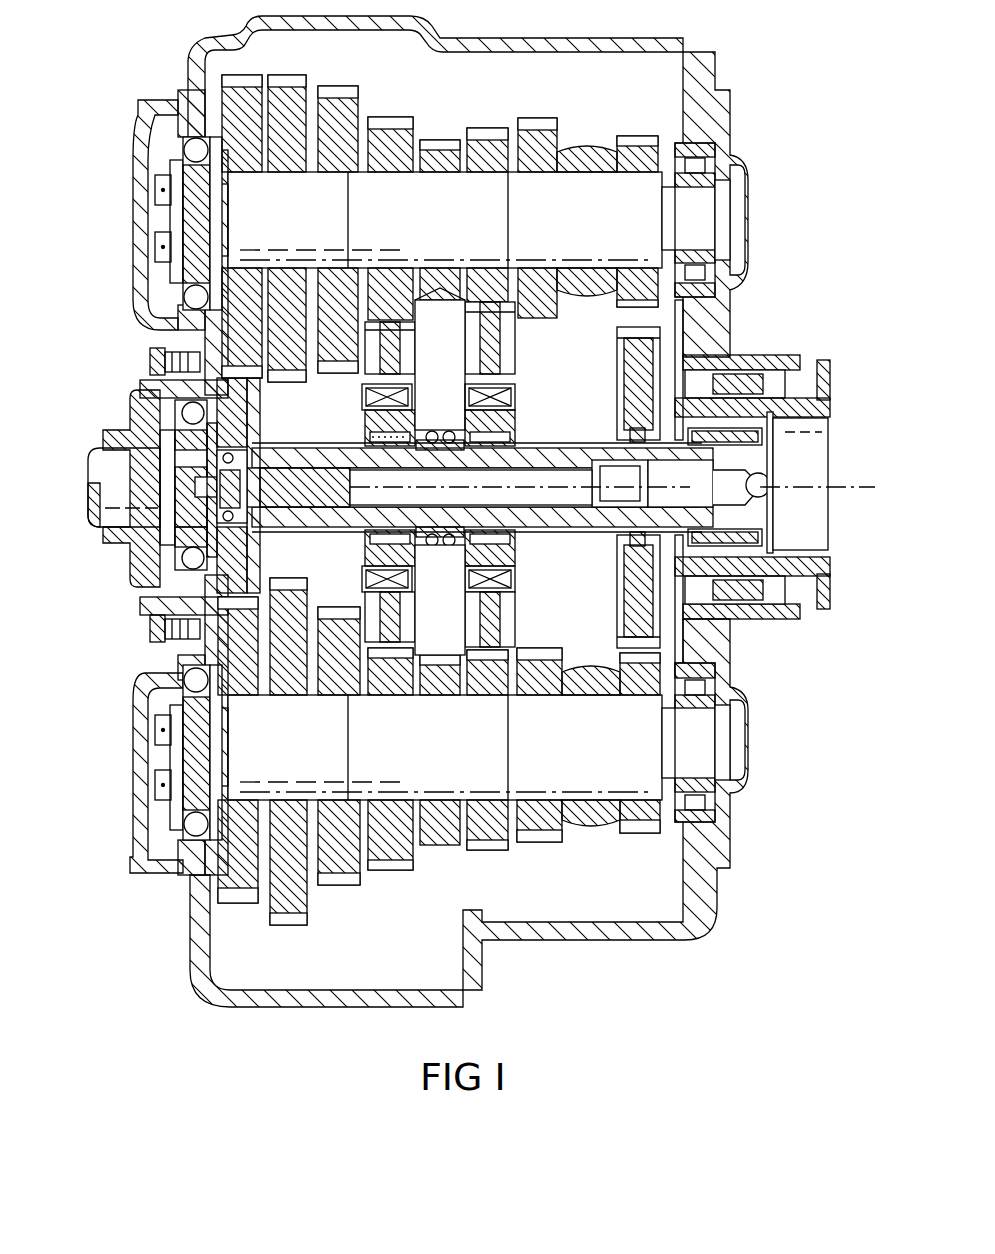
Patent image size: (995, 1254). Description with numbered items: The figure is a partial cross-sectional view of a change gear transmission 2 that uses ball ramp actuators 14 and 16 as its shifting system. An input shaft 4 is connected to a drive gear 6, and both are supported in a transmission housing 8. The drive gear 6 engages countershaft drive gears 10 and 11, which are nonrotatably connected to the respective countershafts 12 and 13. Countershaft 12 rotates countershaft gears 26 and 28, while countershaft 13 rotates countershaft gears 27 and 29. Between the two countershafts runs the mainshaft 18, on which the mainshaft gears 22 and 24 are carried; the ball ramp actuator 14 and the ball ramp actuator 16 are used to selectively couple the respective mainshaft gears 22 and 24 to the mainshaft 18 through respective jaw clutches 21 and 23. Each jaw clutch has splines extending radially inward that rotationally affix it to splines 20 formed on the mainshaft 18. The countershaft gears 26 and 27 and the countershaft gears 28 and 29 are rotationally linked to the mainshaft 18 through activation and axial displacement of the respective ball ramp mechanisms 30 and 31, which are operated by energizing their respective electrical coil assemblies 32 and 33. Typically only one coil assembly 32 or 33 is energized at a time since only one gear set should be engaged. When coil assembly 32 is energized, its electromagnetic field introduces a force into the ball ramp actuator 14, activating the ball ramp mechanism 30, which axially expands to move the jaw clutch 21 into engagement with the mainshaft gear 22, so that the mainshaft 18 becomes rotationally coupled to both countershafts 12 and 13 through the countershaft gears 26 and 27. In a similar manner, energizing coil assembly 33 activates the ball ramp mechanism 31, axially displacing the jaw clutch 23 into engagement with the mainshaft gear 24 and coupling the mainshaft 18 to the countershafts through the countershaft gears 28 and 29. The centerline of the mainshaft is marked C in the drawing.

The change gear transmission 2 is at (737, 60).
The input shaft 4 is at (84, 463).
The drive gear 6 is at (172, 390).
The transmission housing 8 is at (666, 932).
The countershaft drive gear 10 is at (238, 90).
The countershaft drive gear 11 is at (243, 905).
The countershaft 12 is at (440, 208).
The countershaft 13 is at (442, 775).
The ball ramp actuator 14 is at (350, 422).
The ball ramp actuator 16 is at (530, 372).
The mainshaft 18 is at (562, 460).
The splines 20 is at (320, 525).
The jaw clutch 21 is at (432, 470).
The mainshaft gear 22 is at (375, 365).
The jaw clutch 23 is at (495, 440).
The mainshaft gear 24 is at (503, 353).
The countershaft gear 26 is at (372, 290).
The countershaft gear 27 is at (385, 693).
The countershaft gear 28 is at (470, 290).
The countershaft gear 29 is at (475, 690).
The ball ramp mechanism 30 is at (433, 428).
The ball ramp mechanism 31 is at (449, 428).
The electrical coil assembly 32 is at (365, 398).
The electrical coil assembly 33 is at (508, 398).
The centerline C is at (840, 487).